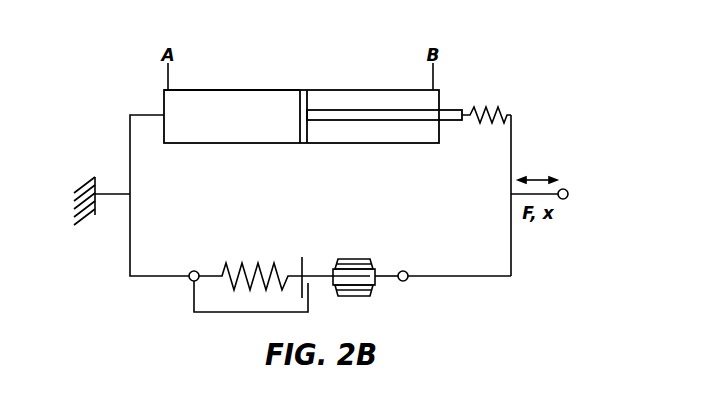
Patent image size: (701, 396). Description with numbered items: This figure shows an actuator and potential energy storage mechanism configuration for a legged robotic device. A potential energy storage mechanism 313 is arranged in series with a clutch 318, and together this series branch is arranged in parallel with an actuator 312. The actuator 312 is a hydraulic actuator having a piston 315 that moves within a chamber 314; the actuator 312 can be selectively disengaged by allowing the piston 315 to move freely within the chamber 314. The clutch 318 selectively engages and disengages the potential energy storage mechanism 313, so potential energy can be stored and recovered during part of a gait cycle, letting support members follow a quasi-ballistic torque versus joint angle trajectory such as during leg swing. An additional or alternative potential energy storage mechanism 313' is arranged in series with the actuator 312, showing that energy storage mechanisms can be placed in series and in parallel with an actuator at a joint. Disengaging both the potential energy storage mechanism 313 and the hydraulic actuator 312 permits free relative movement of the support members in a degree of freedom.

The actuator 312 is at (290, 55).
The chamber 314 is at (231, 105).
The piston 315 is at (299, 105).
The potential energy storage mechanism 313' is at (512, 87).
The potential energy storage mechanism 313 is at (261, 253).
The clutch 318 is at (364, 237).